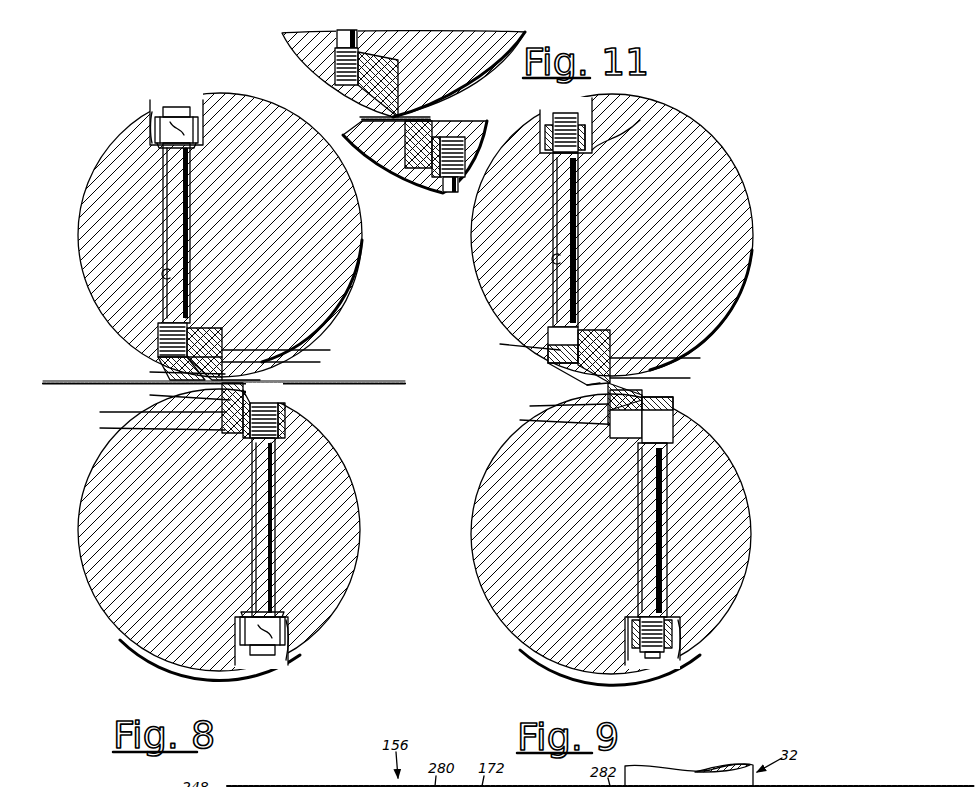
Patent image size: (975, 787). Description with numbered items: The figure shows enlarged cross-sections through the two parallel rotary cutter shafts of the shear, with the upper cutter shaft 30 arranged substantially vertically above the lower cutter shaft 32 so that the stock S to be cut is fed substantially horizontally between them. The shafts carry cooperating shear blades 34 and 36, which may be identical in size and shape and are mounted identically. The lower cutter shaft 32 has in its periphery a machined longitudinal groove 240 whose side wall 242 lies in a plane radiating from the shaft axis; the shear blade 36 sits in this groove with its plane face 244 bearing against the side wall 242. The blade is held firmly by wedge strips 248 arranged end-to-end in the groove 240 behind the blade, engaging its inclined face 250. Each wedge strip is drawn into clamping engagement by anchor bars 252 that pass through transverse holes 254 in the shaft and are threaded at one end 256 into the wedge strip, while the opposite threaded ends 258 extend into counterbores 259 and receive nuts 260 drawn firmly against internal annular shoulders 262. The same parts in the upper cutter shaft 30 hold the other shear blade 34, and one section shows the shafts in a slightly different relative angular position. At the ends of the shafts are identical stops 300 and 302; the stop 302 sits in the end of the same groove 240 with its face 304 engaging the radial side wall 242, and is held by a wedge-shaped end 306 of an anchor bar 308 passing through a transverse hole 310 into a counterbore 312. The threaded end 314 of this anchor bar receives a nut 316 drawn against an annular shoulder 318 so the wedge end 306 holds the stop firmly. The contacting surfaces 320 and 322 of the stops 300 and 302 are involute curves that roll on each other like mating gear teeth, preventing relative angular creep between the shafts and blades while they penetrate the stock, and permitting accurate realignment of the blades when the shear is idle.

In FIG. 8, the upper cutter shaft 30 is at (86, 276).
In FIG. 9, the upper cutter shaft 30 is at (753, 216).
In FIG. 11, the upper cutter shaft 30 is at (286, 54).
In FIG. 8, the lower cutter shaft 32 is at (344, 462).
In FIG. 9, the lower cutter shaft 32 is at (726, 453).
In FIG. 11, the lower cutter shaft 32 is at (491, 145).
In FIG. 8, the shear blade 34 is at (232, 363).
In FIG. 11, the shear blade 34 is at (365, 117).
In FIG. 8, the shear blade 36 is at (228, 399).
In FIG. 11, the shear blade 36 is at (422, 126).
In FIG. 8, the stock S is at (93, 381).
In FIG. 11, the stock S is at (380, 121).
In FIG. 8, the longitudinal groove 240 is at (175, 374).
In FIG. 9, the longitudinal groove 240 is at (543, 379).
In FIG. 8, the side wall 242 is at (232, 353).
In FIG. 9, the side wall 242 is at (616, 379).
In FIG. 8, the plane face 244 is at (205, 345).
In FIG. 8, the wedge strips 248 is at (158, 330).
In FIG. 11, the wedge strips 248 is at (360, 96).
In FIG. 8, the inclined face 250 is at (170, 362).
In FIG. 11, the inclined face 250 is at (336, 66).
In FIG. 8, the anchor bars 252 is at (175, 298).
In FIG. 11, the anchor bars 252 is at (338, 40).
In FIG. 8, the transverse holes 254 is at (174, 285).
In FIG. 11, the transverse holes 254 is at (345, 47).
In FIG. 8, the threaded end 256 is at (175, 345).
In FIG. 8, the opposite threaded ends 258 is at (177, 107).
In FIG. 8, the washer 259 is at (162, 120).
In FIG. 8, the nuts 260 is at (157, 128).
In FIG. 8, the internal annular shoulders 262 is at (150, 140).
In FIG. 9, the stop 300 is at (666, 372).
In FIG. 9, the stop 302 is at (592, 392).
In FIG. 9, the face 304 is at (575, 366).
In FIG. 9, the wedge-shaped end 306 is at (548, 356).
In FIG. 9, the anchor bar 308 is at (567, 285).
In FIG. 9, the transverse hole 310 is at (562, 256).
In FIG. 9, the counterbore 312 is at (549, 126).
In FIG. 9, the threaded end 314 is at (566, 114).
In FIG. 9, the nut 316 is at (592, 130).
In FIG. 9, the annular shoulder 318 is at (600, 150).
In FIG. 9, the contacting surface 320 is at (578, 374).
In FIG. 9, the contacting surface 322 is at (642, 393).